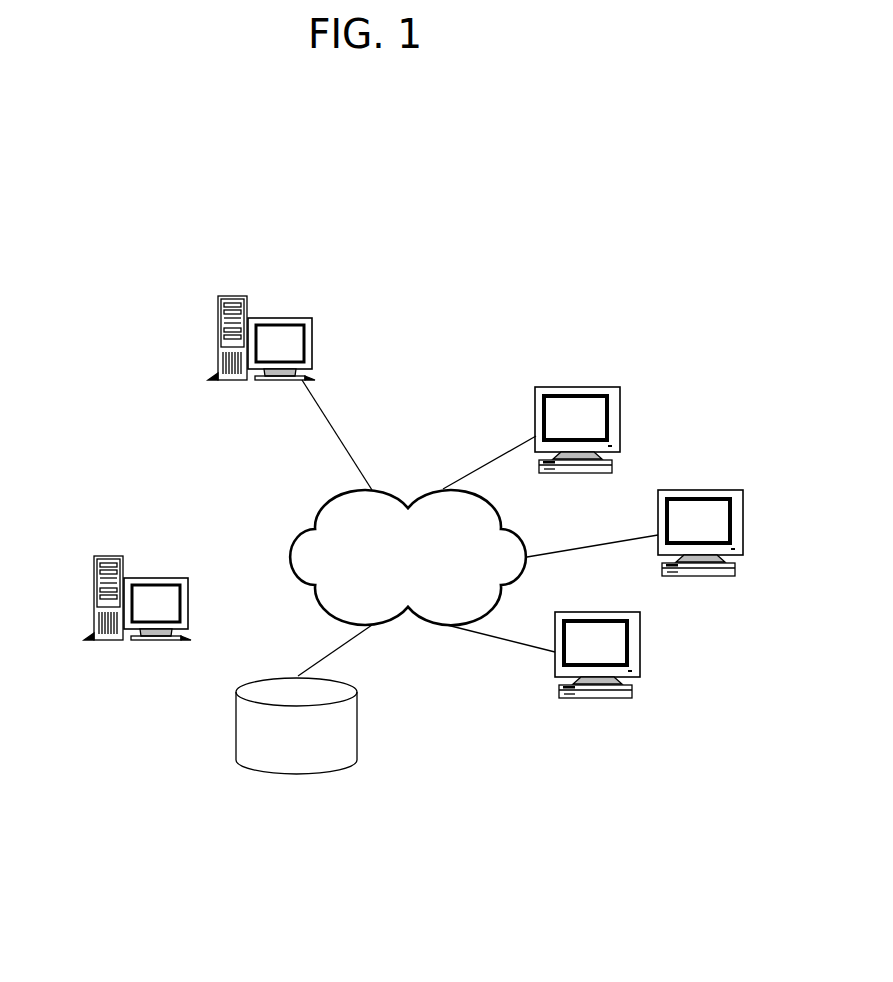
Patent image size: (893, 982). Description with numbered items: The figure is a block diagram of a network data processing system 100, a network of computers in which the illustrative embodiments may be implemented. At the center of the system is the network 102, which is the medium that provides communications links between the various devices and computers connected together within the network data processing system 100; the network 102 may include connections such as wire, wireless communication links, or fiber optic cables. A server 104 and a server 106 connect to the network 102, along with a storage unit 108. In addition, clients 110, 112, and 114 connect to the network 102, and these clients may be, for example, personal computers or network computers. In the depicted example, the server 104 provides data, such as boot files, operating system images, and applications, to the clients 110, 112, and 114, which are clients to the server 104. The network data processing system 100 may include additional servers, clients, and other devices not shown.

The network data processing system 100 is at (126, 430).
The network 102 is at (423, 576).
The server 104 is at (280, 318).
The server 106 is at (153, 578).
The storage unit 108 is at (298, 774).
The client 110 is at (575, 387).
The client 112 is at (701, 490).
The client 114 is at (640, 652).